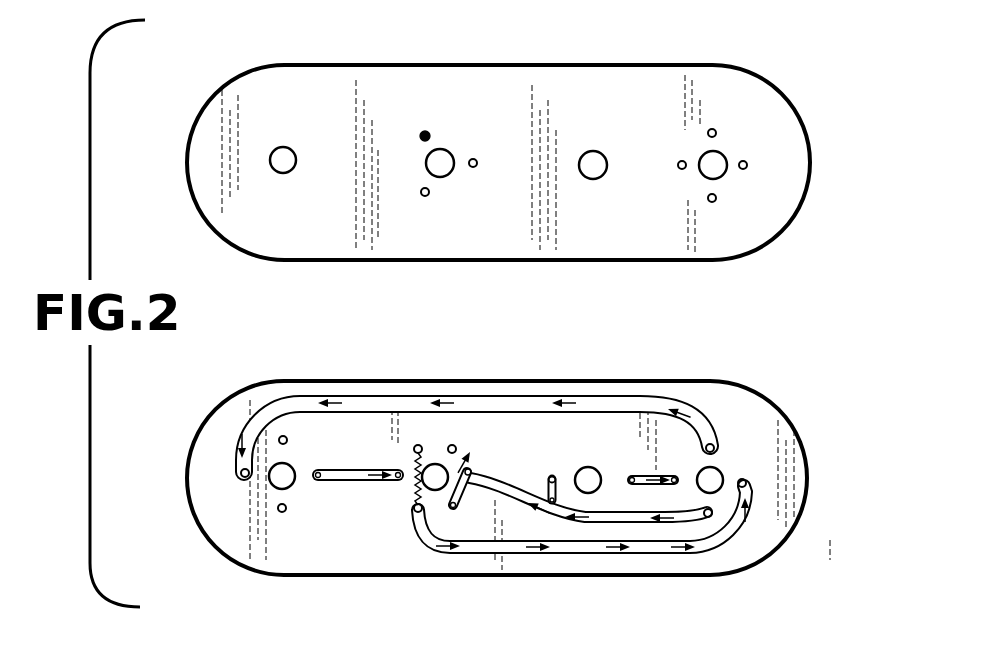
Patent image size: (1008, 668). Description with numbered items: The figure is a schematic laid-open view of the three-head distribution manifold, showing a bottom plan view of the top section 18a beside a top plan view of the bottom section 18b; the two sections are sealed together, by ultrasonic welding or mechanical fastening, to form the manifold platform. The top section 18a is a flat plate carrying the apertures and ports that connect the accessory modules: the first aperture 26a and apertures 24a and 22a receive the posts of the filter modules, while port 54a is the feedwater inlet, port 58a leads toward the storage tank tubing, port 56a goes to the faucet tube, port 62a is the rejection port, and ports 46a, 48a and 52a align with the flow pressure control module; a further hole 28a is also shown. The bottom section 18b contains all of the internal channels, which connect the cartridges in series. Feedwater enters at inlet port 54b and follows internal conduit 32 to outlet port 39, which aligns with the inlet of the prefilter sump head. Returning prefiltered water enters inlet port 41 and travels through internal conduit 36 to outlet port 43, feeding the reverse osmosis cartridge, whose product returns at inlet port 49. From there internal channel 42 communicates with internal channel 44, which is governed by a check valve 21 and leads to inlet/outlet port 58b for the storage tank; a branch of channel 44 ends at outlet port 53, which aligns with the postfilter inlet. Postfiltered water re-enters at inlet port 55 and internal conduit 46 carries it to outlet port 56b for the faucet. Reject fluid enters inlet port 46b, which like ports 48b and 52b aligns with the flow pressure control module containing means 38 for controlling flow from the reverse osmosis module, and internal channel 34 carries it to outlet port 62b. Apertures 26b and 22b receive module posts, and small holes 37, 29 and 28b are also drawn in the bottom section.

The top section 18a is at (255, 223).
The first aperture 26a is at (283, 147).
The port 46a is at (425, 131).
The aperture 24a is at (452, 156).
The aperture 22a is at (593, 152).
The inlet/outlet port 58a is at (712, 129).
The hole 28a is at (722, 155).
The rejection port 62a is at (747, 169).
The outlet port 56a is at (682, 169).
The inlet port 54a is at (713, 202).
The port 48a is at (425, 196).
The port 52a is at (474, 167).
The bottom section 18b is at (237, 533).
The internal conduit 32 is at (672, 402).
The internal channel 44 is at (573, 522).
The internal conduit 46 is at (663, 555).
The internal channel 34 is at (716, 572).
The internal conduit 36 is at (343, 483).
The inlet port 55 is at (630, 477).
The inlet port 49 is at (478, 492).
The internal channel 42 is at (553, 505).
The outlet port 53 is at (552, 476).
The port 48b is at (416, 452).
The outlet port 43 is at (414, 447).
The inlet port 46b is at (452, 510).
The flow controlling means 38 is at (404, 500).
The first aperture 26b is at (274, 468).
The hole 37 is at (284, 436).
The hole 29 is at (278, 508).
The outlet port 39 is at (242, 473).
The inlet port 41 is at (285, 573).
The check valve 21 is at (467, 440).
The aperture 22b is at (590, 470).
The hole 28b is at (717, 472).
The outlet port 56b is at (713, 444).
The inlet port 54b is at (716, 440).
The outlet port 62b is at (750, 488).
The inlet/outlet port 58b is at (714, 518).
The port 52b is at (472, 468).